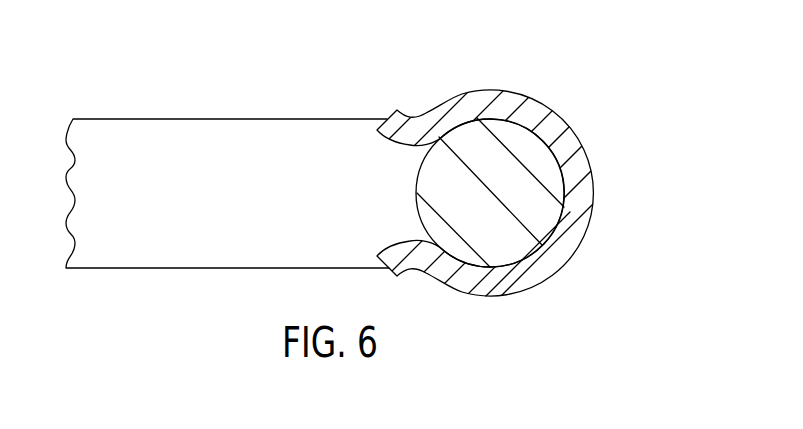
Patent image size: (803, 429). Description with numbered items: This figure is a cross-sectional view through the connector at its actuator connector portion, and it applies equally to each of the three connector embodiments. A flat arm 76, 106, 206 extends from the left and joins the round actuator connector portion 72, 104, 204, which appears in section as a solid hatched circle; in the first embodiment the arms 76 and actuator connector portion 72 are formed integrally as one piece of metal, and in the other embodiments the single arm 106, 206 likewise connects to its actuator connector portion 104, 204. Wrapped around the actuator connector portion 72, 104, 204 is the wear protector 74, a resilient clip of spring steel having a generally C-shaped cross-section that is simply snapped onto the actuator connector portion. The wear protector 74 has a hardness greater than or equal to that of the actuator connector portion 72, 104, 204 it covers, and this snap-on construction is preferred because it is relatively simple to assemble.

The arm 76 is at (227, 163).
The arm 106 is at (227, 163).
The arm 206 is at (265, 118).
The wear protector 74 is at (505, 102).
The actuator connector portion 72 is at (573, 198).
The actuator connector portion 104 is at (573, 198).
The actuator connector portion 204 is at (540, 213).